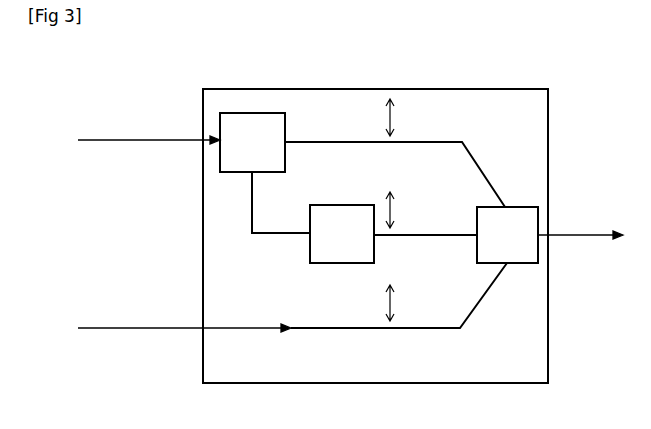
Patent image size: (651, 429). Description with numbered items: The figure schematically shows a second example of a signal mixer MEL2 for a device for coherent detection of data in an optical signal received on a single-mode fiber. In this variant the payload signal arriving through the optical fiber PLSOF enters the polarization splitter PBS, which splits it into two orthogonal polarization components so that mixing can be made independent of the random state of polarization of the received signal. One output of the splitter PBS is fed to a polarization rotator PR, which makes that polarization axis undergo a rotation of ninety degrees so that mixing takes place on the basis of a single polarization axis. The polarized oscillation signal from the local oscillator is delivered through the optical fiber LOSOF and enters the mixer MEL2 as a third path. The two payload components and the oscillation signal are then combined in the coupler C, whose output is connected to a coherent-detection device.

The mixer MEL2 is at (287, 89).
The optical fiber PLSOF is at (134, 123).
The optical fiber LOSOF is at (277, 297).
The polarizing beamsplitter PBS is at (362, 173).
The polarization rotator PR is at (393, 234).
The coupler C is at (550, 235).